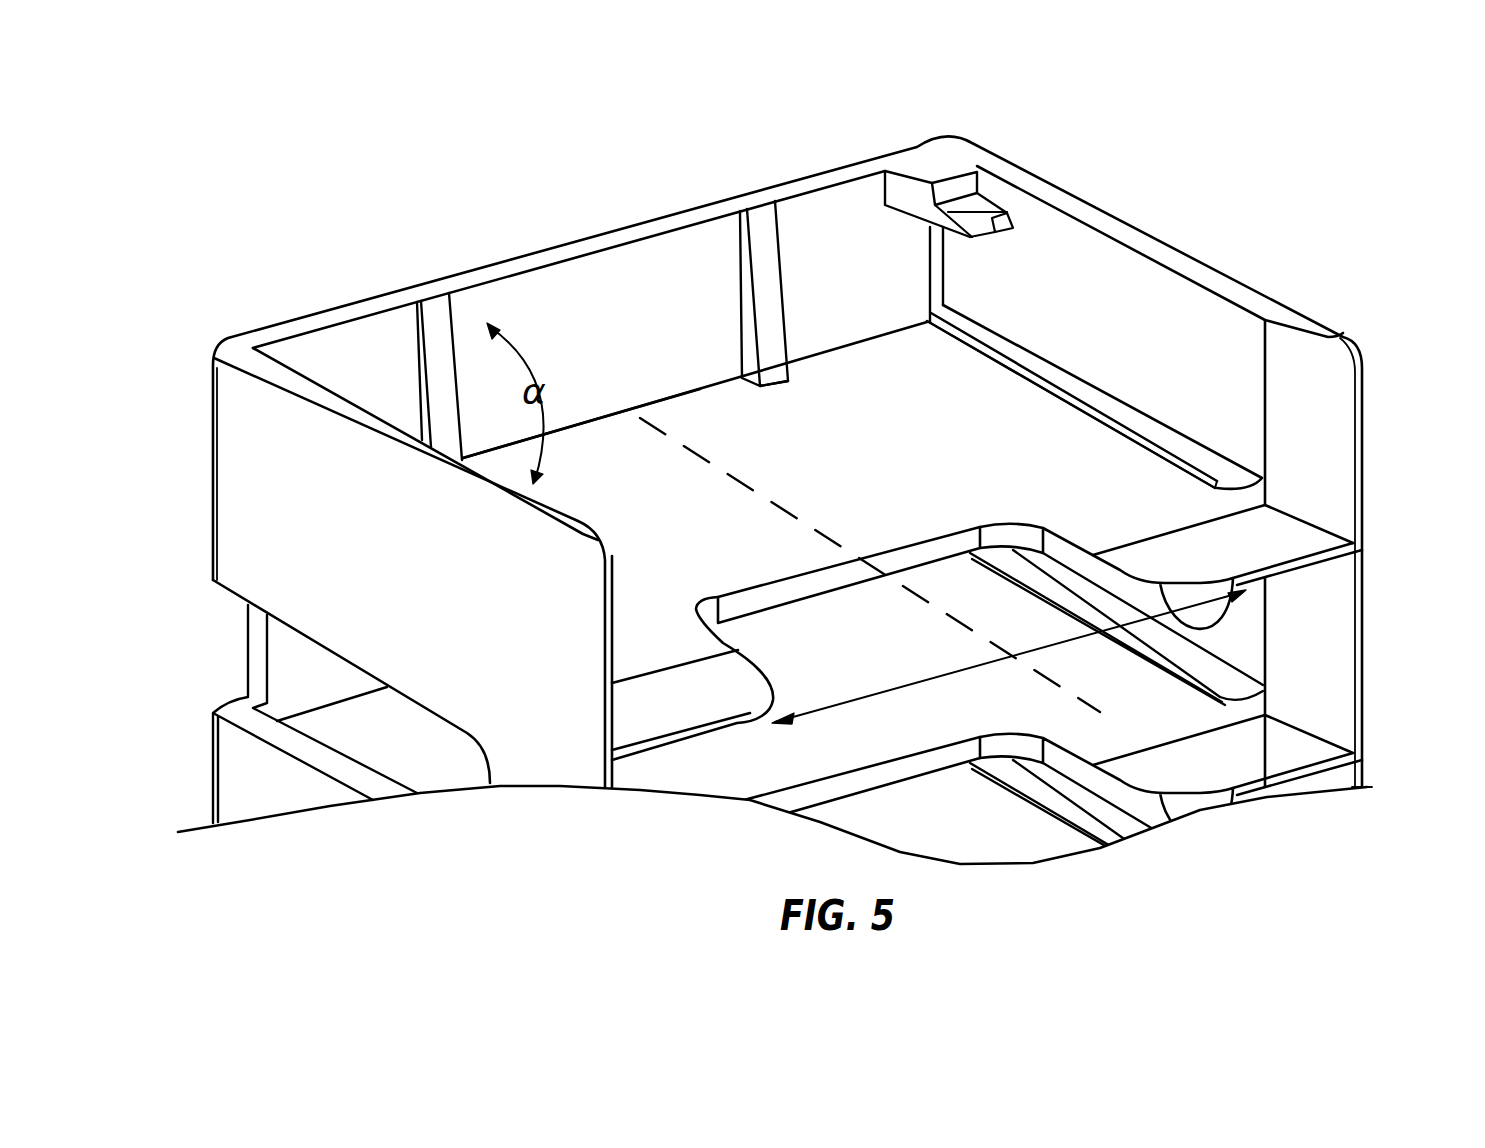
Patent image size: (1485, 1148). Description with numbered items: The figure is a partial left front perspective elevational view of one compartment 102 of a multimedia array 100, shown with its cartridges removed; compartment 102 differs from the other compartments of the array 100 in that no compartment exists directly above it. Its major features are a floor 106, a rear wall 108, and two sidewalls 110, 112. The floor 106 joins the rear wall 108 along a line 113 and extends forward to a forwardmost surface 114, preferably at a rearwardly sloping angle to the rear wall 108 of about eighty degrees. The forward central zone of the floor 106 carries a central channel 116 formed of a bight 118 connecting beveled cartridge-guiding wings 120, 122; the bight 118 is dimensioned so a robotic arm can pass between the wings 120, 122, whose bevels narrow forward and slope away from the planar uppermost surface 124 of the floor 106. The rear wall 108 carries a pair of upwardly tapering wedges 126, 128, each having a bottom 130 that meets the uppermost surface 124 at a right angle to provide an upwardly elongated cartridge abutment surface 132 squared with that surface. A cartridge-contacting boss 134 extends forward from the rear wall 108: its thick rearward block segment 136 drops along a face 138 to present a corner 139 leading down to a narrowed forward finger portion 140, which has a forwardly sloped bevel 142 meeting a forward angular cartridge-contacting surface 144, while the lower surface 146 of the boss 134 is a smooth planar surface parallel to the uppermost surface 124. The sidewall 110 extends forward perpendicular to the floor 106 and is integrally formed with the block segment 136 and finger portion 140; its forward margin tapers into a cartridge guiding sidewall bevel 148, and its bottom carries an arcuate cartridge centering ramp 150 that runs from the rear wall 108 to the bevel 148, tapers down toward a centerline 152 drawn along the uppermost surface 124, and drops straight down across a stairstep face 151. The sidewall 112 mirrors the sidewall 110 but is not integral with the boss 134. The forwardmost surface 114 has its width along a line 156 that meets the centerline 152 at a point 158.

The array 100 is at (1350, 338).
The compartment 102 is at (1093, 265).
The floor 106 is at (858, 452).
The rear wall 108 is at (660, 318).
The sidewall 110 is at (1140, 320).
The sidewall 112 is at (455, 538).
The line 113 is at (693, 392).
The forwardmost surface 114 is at (1335, 555).
The central channel 116 is at (992, 527).
The bight 118 is at (917, 557).
The cartridge-guiding wing 120 is at (1203, 533).
The cartridge-guiding wing 122 is at (708, 672).
The uppermost surface 124 is at (962, 410).
The wedge 126 is at (430, 360).
The wedge 128 is at (757, 283).
The bottom 130 is at (790, 381).
The cartridge abutment surface 132 is at (772, 316).
The cartridge-contacting boss 134 is at (912, 163).
The block segment 136 is at (915, 192).
The face 138 is at (975, 178).
The corner 139 is at (932, 181).
The finger portion 140 is at (990, 205).
The bevel 142 is at (1000, 205).
The cartridge-contacting surface 144 is at (985, 235).
The lower surface 146 is at (963, 237).
The sidewall bevel 148 is at (1320, 430).
The cartridge centering ramp 150 is at (1110, 406).
The stairstep face 151 is at (1098, 439).
The centerline 152 is at (812, 531).
The line 156 is at (966, 670).
The point 158 is at (1008, 660).